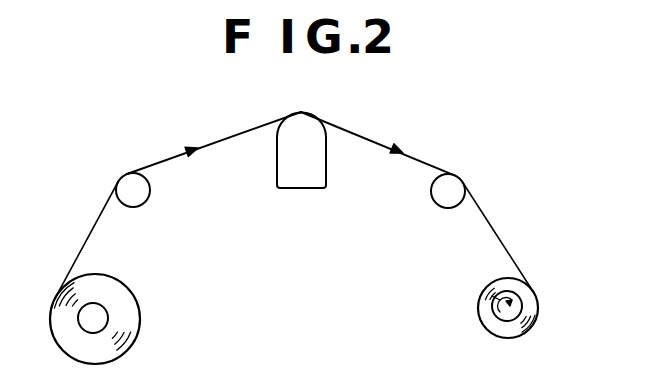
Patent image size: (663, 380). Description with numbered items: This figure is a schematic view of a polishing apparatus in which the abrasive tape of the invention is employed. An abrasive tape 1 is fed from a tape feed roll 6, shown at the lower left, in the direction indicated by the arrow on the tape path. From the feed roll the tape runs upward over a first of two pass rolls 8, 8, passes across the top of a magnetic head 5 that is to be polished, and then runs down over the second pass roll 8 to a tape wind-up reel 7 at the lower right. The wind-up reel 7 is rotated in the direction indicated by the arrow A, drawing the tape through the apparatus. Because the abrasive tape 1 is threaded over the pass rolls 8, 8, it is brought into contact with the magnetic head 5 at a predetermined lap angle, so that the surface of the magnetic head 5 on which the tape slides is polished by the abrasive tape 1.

The abrasive tape 1 is at (230, 136).
The magnetic head 5 is at (302, 177).
The tape feed roll 6 is at (100, 310).
The tape wind-up reel 7 is at (527, 297).
The pass rolls 8 is at (140, 192).
The arrow A is at (490, 295).